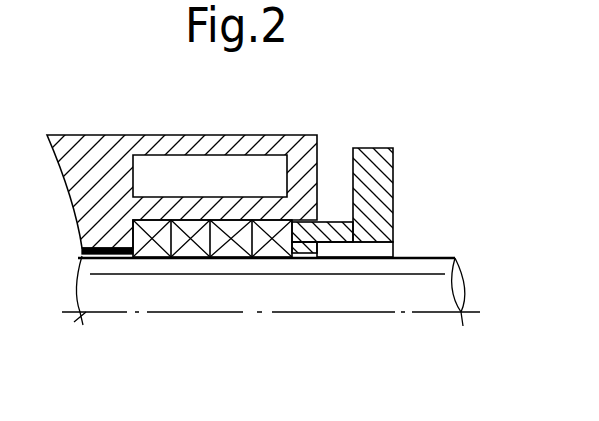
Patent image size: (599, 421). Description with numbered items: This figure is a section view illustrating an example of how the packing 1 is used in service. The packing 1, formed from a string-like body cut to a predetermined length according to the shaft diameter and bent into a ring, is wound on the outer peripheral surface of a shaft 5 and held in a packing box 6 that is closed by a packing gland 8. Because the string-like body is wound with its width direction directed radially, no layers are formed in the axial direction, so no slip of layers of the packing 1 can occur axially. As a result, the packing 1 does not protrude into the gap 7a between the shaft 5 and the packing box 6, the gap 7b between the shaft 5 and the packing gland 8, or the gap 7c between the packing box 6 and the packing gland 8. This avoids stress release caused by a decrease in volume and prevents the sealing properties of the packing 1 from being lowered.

The packing 1 is at (270, 257).
The shaft 5 is at (345, 293).
The packing box 6 is at (86, 158).
The gap 7a is at (82, 253).
The gap 7b is at (293, 258).
The gap 7c is at (322, 222).
The packing gland 8 is at (393, 170).